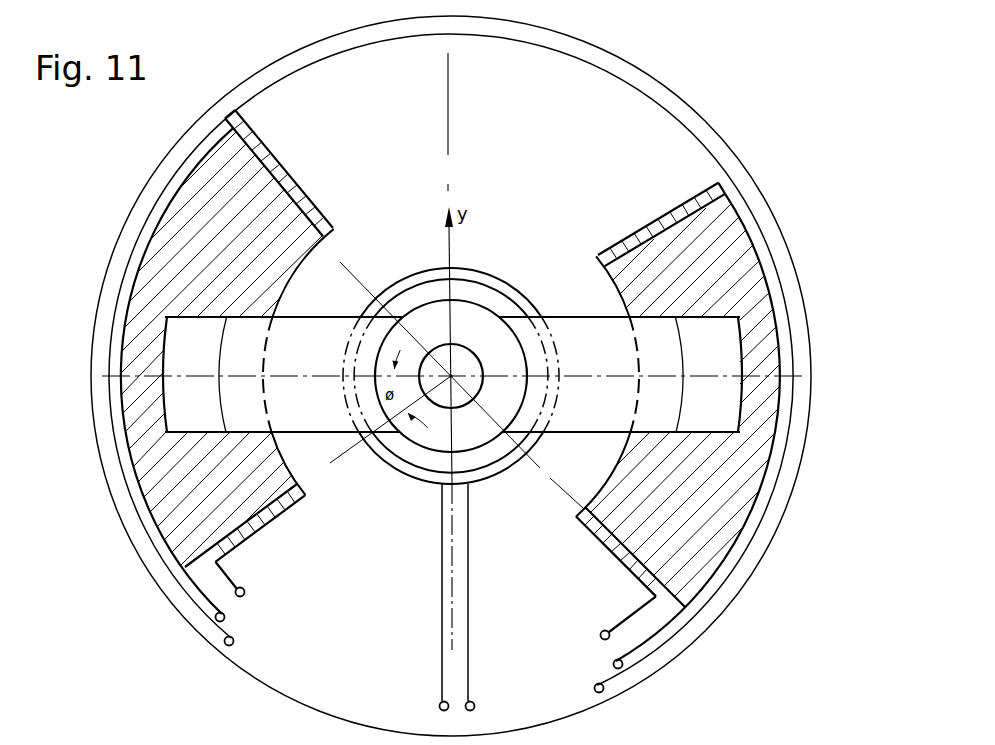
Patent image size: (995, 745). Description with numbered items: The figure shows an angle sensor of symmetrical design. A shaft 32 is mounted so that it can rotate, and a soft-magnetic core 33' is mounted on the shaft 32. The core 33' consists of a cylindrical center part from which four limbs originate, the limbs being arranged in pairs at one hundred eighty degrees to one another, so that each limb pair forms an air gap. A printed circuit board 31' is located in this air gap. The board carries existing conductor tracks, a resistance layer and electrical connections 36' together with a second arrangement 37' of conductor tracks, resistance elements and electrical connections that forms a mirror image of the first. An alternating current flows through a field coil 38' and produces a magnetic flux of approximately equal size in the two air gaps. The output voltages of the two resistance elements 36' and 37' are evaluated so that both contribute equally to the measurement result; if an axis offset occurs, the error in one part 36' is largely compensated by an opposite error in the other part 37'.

The printed circuit board 31' is at (451, 376).
The conductor tracks, resistance layer and electrical connections 36' is at (198, 366).
The second arrangement of conductor tracks, resistance elements and electrical conne 37' is at (717, 421).
The soft-magnetic core 33' is at (452, 374).
The shaft 32 is at (451, 376).
The field coil 38' is at (451, 489).